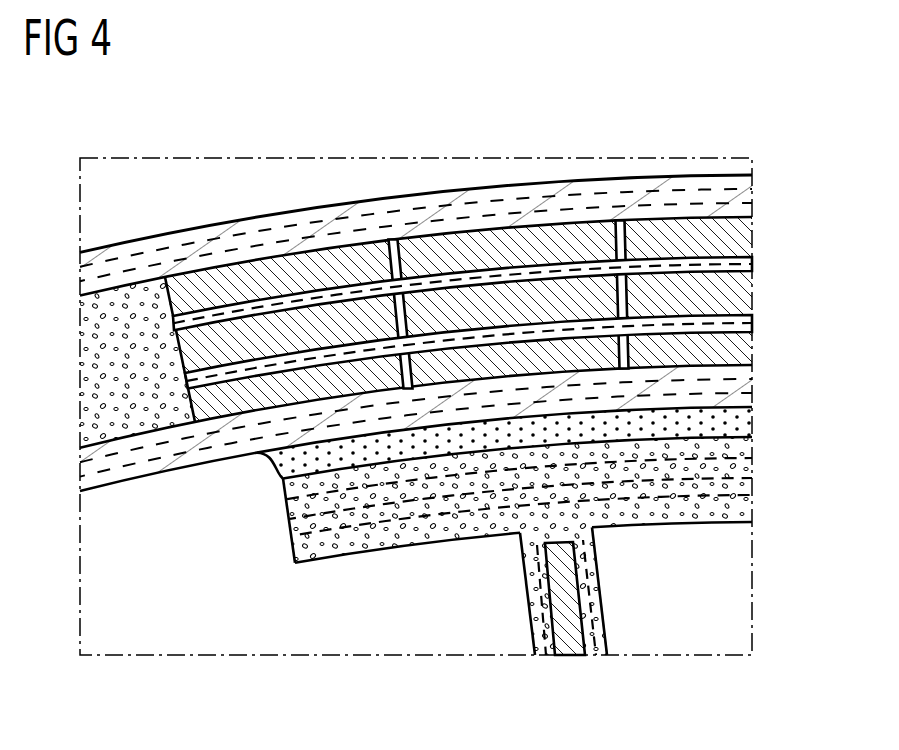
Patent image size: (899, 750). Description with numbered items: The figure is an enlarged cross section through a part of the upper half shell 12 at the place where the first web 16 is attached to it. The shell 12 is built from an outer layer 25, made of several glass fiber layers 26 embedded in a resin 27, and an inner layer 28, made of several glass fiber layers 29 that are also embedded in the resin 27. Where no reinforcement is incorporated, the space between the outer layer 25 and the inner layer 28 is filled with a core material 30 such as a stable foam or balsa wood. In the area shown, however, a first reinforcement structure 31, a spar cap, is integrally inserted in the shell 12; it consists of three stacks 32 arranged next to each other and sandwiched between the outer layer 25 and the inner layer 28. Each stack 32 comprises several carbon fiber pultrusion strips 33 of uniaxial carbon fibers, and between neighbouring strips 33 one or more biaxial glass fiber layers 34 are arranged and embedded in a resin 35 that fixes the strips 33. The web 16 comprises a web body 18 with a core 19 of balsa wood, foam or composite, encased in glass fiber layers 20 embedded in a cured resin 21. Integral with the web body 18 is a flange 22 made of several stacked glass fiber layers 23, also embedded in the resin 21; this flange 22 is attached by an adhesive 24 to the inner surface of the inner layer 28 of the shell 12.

The upper half shell 12 is at (151, 477).
The first web 16 is at (405, 568).
The web body 18 is at (607, 623).
The core 19 is at (578, 665).
The glass fiber layers 20 is at (527, 597).
The resin 21 is at (540, 618).
The flange 22 is at (283, 566).
The layers of glass fibers 23 is at (745, 458).
The adhesive 24 is at (745, 418).
The outer layer 25 is at (620, 178).
The glass fiber layers 26 is at (233, 250).
The resin 27 is at (290, 213).
The inner layer 28 is at (90, 463).
The glass fiber layers 29 is at (745, 374).
The core material 30 is at (85, 420).
The first reinforcement structure 31 is at (470, 217).
The stacks 32 is at (348, 233).
The carbon fiber pultrusion strips 33 is at (745, 226).
The biaxial glass fiber layers 34 is at (218, 312).
The resin 35 is at (734, 260).